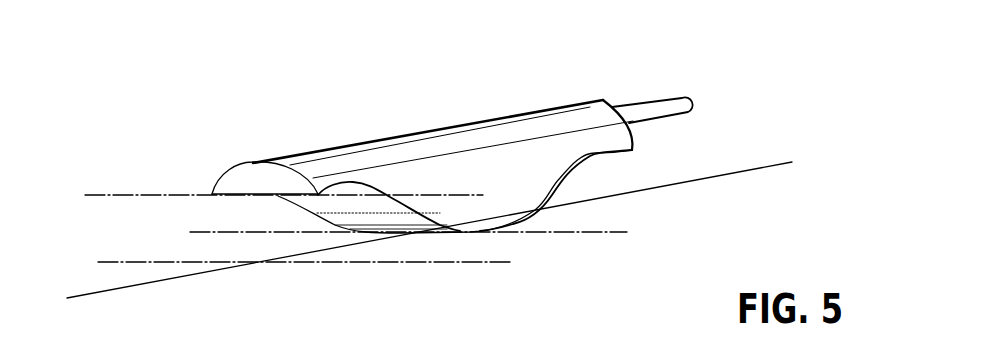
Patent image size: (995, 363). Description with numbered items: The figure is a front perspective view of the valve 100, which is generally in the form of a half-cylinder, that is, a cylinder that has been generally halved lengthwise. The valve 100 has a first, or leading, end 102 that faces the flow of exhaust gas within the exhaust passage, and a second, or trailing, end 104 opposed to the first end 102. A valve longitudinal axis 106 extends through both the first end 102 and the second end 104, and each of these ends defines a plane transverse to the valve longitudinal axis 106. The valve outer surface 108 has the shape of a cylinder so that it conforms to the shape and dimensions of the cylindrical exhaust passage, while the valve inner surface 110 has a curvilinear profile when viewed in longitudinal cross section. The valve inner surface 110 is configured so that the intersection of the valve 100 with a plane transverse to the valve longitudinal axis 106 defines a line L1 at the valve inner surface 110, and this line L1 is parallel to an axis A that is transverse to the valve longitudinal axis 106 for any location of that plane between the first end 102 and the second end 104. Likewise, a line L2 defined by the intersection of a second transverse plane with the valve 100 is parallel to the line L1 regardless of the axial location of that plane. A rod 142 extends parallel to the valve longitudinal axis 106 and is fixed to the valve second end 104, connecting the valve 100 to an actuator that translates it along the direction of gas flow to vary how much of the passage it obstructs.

The valve 100 is at (645, 212).
The first end 102 is at (267, 178).
The second end 104 is at (631, 136).
The valve longitudinal axis 106 is at (717, 177).
The valve outer surface 108 is at (438, 147).
The valve inner surface 110 is at (385, 220).
The rod 142 is at (653, 110).
The line L1 is at (122, 194).
The line L2 is at (587, 233).
The axis A is at (463, 262).